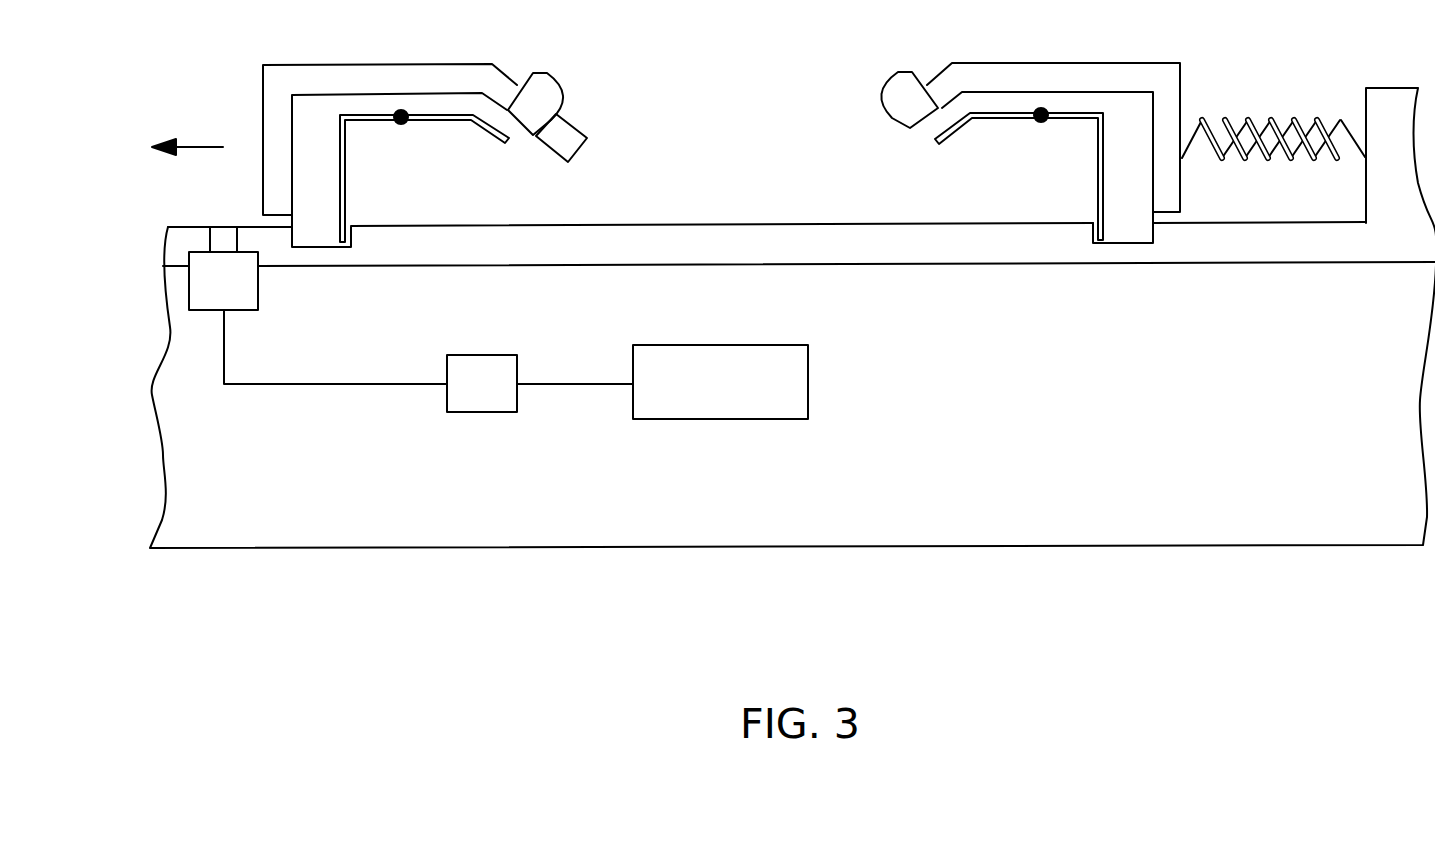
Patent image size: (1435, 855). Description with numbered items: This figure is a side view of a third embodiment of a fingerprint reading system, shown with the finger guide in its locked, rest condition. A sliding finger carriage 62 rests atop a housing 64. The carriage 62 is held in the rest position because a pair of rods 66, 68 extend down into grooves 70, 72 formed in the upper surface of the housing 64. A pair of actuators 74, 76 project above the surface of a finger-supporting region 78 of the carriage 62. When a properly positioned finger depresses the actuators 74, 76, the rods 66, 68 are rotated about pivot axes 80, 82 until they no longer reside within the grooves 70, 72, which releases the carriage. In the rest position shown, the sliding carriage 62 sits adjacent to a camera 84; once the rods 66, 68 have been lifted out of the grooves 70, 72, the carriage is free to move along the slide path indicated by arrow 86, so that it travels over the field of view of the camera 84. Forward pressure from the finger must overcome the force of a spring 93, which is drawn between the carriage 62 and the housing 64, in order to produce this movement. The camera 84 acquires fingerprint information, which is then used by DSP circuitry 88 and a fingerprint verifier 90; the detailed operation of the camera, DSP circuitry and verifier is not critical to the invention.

The sliding finger carriage 62 is at (1188, 83).
The housing 64 is at (1200, 227).
The rod 66 is at (346, 196).
The rod 68 is at (1097, 195).
The groove 70 is at (307, 247).
The groove 72 is at (1131, 245).
The actuator 74 is at (545, 83).
The actuator 76 is at (893, 83).
The finger-supporting region 78 is at (573, 128).
The pivot axis 80 is at (401, 124).
The pivot axis 82 is at (1041, 123).
The camera 84 is at (198, 293).
The arrow 86 is at (208, 146).
The DSP circuitry 88 is at (469, 412).
The fingerprint verifier 90 is at (737, 419).
The spring 93 is at (1267, 118).